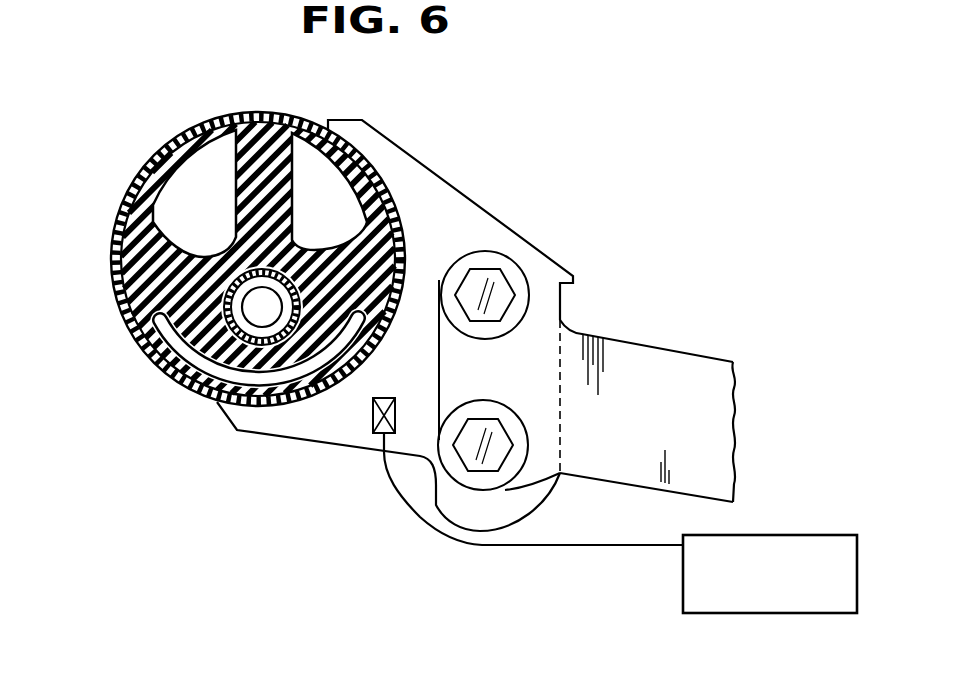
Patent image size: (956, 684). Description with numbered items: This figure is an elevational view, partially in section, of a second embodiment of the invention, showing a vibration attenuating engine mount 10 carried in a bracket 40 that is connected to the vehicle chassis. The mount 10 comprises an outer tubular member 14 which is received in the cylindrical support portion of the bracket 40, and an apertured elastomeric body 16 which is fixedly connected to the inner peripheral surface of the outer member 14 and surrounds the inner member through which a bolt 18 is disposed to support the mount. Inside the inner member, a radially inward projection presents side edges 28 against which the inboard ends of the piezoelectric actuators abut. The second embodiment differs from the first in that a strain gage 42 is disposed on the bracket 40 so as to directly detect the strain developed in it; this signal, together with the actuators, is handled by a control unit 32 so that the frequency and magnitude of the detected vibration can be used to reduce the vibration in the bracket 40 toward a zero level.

The vibration attenuating mount 10 is at (308, 117).
The outer tubular member 14 is at (177, 137).
The apertured elastomeric body 16 is at (137, 248).
The bolt 18 is at (217, 357).
The side edge of inwardly extending projection 28 is at (233, 303).
The control unit 32 is at (763, 533).
The bracket 40 is at (468, 215).
The strain gage 42 is at (373, 417).